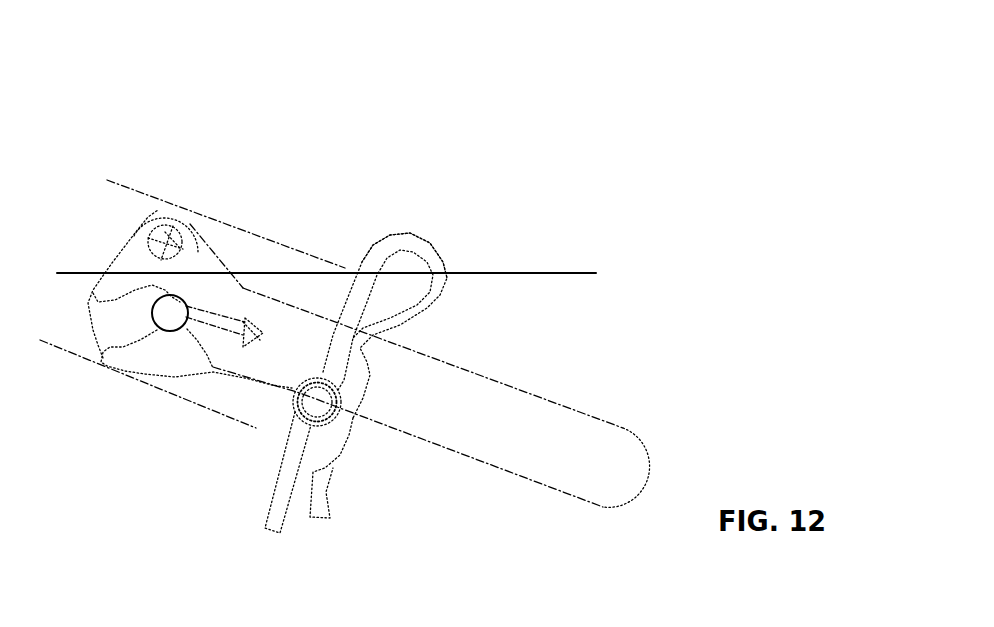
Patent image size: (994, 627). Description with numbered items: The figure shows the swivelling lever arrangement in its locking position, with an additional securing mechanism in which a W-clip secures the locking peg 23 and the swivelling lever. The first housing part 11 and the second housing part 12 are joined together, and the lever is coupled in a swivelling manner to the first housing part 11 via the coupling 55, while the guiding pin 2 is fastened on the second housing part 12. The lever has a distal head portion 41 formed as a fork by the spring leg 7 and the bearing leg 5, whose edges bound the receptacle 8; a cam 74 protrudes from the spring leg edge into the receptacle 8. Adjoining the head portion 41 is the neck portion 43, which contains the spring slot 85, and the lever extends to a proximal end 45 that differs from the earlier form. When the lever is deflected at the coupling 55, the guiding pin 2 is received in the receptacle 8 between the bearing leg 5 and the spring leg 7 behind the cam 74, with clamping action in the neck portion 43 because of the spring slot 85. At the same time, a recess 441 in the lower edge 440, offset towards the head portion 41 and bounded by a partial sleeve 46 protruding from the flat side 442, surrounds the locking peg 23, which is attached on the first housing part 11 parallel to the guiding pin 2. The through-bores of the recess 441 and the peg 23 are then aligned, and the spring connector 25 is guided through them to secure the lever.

The distal head portion 41 is at (108, 93).
The spring leg 7 is at (115, 357).
The bearing leg 5 is at (136, 252).
The coupling 55 is at (186, 236).
The spring slot 85 is at (205, 313).
The neck portion 43 is at (233, 300).
The spring connector 25 is at (423, 248).
The first housing part 11 is at (559, 238).
The second housing part 12 is at (559, 319).
The receptacle 8 is at (121, 333).
The guiding pin 2 is at (175, 320).
The cam 74 is at (160, 334).
The flat side 442 is at (436, 401).
The locking peg 23 is at (317, 410).
The recess 441 is at (338, 403).
The partial sleeve 46 is at (297, 386).
The lower edge 440 is at (530, 481).
The proximal end 45 is at (623, 465).